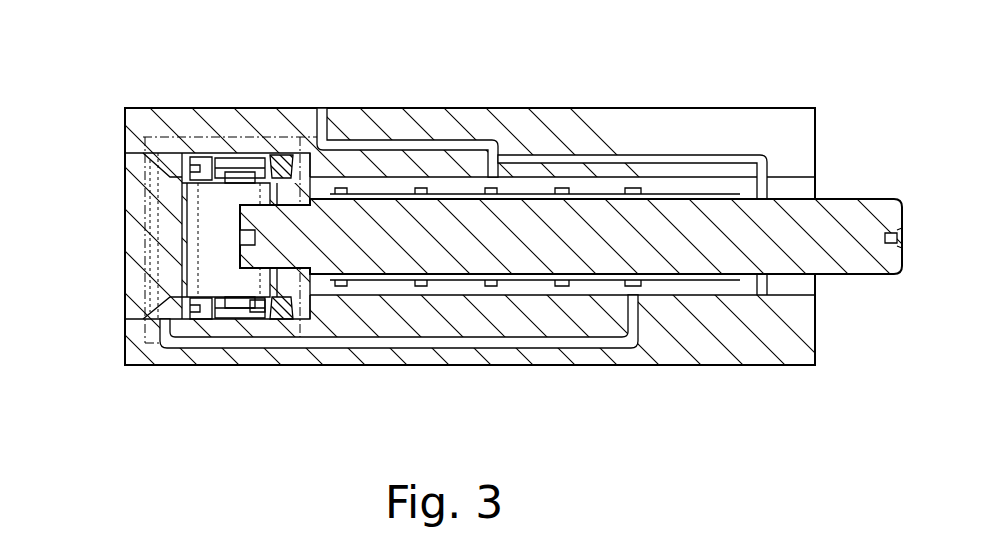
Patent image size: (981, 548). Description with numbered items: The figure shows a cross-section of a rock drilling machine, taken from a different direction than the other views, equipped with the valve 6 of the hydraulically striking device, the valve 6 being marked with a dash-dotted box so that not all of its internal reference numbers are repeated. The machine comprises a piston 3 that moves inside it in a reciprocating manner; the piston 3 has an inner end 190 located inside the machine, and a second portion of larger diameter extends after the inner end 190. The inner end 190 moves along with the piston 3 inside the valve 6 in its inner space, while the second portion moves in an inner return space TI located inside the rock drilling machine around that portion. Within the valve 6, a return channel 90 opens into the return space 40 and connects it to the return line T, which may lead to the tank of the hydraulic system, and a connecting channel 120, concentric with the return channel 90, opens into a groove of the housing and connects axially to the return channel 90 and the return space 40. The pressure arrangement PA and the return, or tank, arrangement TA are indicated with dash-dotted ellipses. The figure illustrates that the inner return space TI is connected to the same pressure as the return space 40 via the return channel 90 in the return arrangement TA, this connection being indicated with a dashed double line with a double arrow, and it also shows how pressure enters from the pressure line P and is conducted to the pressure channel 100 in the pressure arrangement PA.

The valve 6 is at (150, 255).
The pressure channel 100 is at (166, 170).
The pressure line P is at (165, 135).
The pressure arrangement PA is at (162, 340).
The connecting channel 120 is at (184, 152).
The return space 40 is at (282, 165).
The return channel 90 is at (290, 160).
The return line T is at (303, 155).
The piston 3 is at (880, 198).
The inner end 190 is at (240, 253).
The return arrangement TA is at (258, 313).
The inner return space TI is at (352, 272).